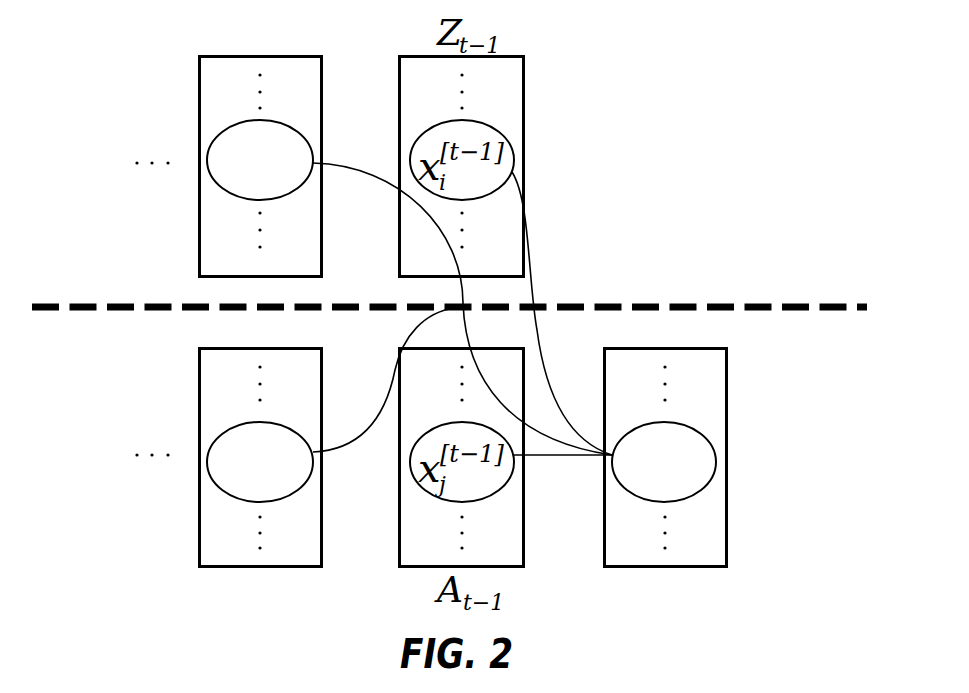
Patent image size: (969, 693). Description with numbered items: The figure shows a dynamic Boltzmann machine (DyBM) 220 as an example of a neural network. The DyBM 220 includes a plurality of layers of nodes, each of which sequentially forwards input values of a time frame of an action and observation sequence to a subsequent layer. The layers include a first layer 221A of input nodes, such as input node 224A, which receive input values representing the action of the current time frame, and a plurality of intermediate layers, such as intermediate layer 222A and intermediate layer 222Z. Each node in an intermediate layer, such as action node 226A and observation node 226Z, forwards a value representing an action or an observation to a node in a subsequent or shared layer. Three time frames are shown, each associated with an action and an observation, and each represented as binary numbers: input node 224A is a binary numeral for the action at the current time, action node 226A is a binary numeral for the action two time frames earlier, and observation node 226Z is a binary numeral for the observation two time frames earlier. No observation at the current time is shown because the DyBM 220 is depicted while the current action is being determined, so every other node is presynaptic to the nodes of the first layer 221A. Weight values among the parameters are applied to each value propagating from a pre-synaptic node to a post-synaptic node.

The dynamic Boltzmann machine 220 is at (705, 188).
The first layer 221A is at (726, 408).
The intermediate layer 222A is at (199, 495).
The intermediate layer 222Z is at (199, 193).
The input node 224A is at (709, 482).
The action node 226A is at (215, 445).
The observation node 226Z is at (216, 140).